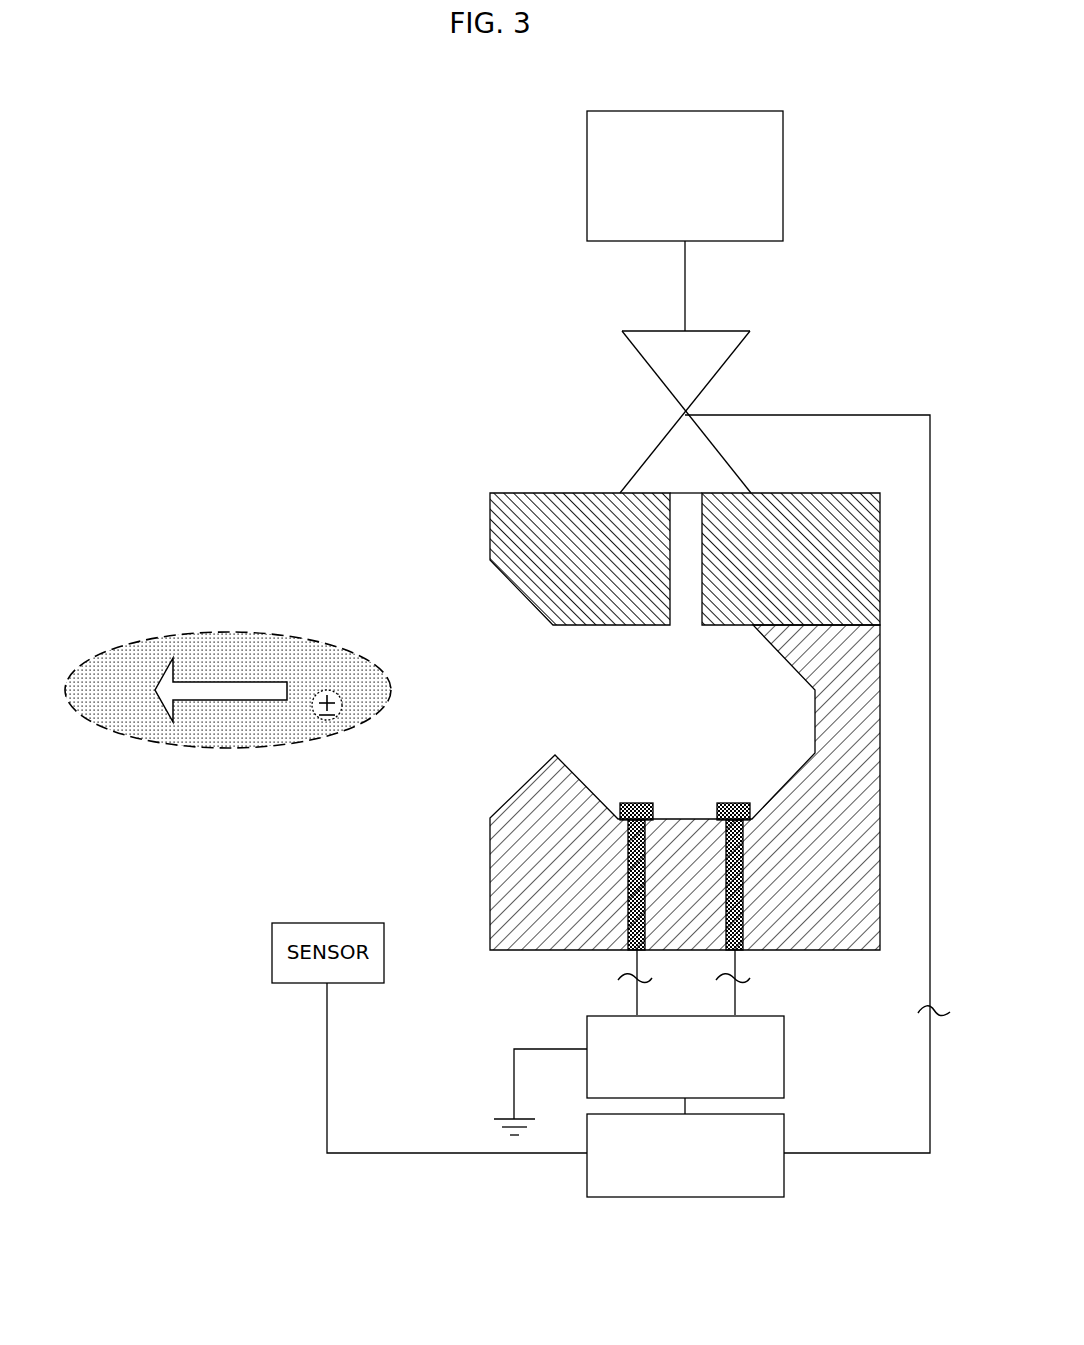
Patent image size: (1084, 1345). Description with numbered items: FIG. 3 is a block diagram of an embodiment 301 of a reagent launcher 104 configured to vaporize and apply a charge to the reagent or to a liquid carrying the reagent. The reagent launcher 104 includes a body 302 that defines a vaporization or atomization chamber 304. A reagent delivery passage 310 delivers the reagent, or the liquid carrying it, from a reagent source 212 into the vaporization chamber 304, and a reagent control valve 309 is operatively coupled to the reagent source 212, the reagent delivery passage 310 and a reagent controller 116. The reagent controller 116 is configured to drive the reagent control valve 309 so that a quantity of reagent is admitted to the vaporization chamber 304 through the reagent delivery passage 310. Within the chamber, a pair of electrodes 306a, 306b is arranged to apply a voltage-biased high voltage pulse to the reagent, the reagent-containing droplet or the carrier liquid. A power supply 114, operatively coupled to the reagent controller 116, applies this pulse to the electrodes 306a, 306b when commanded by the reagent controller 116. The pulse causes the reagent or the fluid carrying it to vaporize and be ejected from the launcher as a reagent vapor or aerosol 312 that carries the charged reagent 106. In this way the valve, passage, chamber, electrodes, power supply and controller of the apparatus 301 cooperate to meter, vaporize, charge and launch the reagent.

The embodiment of a reagent launcher 301 is at (316, 160).
The reagent source 212 is at (685, 176).
The reagent control valve 309 is at (684, 416).
The reagent launcher 104 is at (482, 112).
The reagent vapor or aerosol 312 is at (65, 572).
The reagent delivery passage 310 is at (680, 635).
The vaporization or atomization chamber 304 is at (673, 760).
The electrode 306a is at (622, 803).
The electrode 306b is at (733, 803).
The charged reagent 106 is at (327, 720).
The body 302 is at (836, 951).
The power supply 114 is at (685, 1057).
The reagent controller 116 is at (685, 1155).